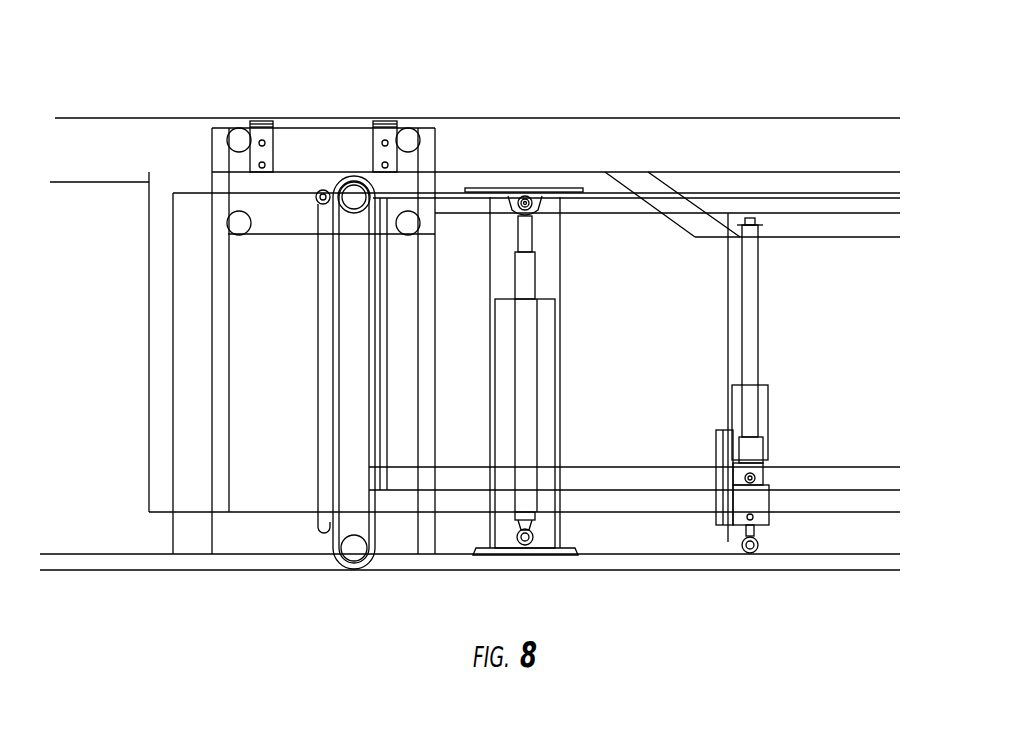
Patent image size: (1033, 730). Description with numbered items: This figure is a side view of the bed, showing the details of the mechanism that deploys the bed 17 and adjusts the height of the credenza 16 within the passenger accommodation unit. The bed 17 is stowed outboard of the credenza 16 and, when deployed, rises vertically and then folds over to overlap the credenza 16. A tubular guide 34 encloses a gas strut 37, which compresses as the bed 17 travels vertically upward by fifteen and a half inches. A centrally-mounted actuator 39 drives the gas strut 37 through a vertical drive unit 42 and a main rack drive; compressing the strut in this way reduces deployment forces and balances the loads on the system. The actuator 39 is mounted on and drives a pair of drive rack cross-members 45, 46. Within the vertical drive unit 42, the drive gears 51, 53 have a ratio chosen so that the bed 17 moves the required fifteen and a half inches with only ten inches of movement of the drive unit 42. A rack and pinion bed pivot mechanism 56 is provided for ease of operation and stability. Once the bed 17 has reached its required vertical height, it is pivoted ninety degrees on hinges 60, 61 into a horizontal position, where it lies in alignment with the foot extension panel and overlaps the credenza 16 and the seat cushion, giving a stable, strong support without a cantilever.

The credenza 16 is at (848, 227).
The deployable bed 17 is at (653, 140).
The tubular guide 34 is at (505, 322).
The gas strut 37 is at (527, 232).
The actuator 39 is at (757, 498).
The vertical drive unit 42 is at (333, 423).
The drive rack cross-member 45 is at (722, 207).
The drive rack cross-member 46 is at (618, 480).
The drive gear 51 is at (352, 193).
The drive gear 53 is at (356, 547).
The rack and pinion bed pivot mechanism 56 is at (405, 130).
The hinge 60 is at (380, 120).
The hinge 61 is at (253, 118).